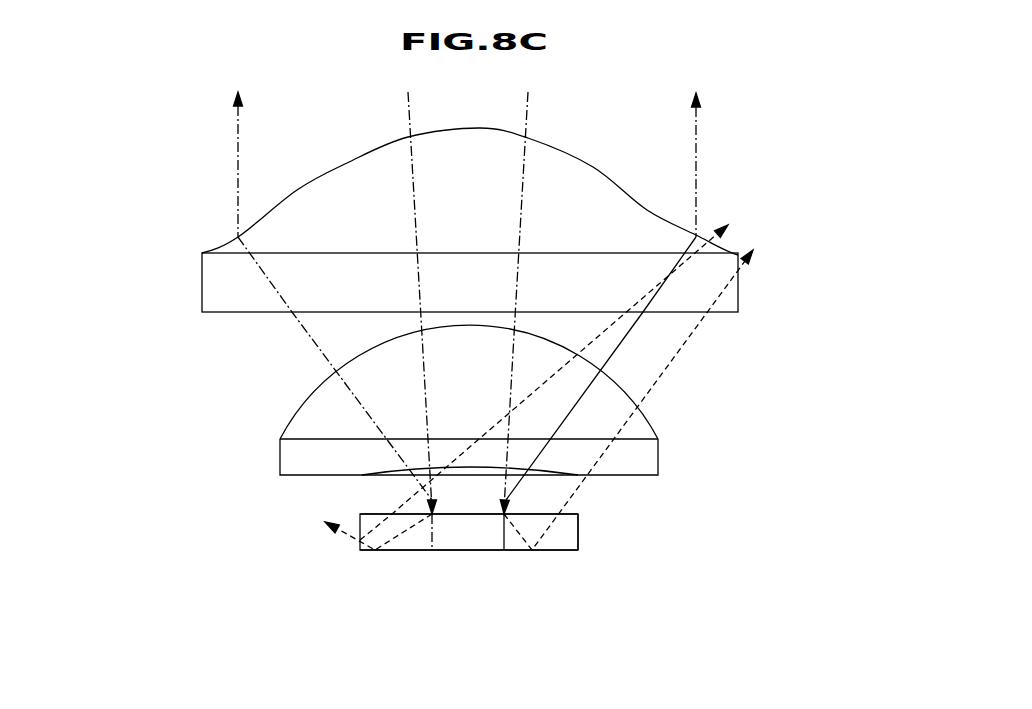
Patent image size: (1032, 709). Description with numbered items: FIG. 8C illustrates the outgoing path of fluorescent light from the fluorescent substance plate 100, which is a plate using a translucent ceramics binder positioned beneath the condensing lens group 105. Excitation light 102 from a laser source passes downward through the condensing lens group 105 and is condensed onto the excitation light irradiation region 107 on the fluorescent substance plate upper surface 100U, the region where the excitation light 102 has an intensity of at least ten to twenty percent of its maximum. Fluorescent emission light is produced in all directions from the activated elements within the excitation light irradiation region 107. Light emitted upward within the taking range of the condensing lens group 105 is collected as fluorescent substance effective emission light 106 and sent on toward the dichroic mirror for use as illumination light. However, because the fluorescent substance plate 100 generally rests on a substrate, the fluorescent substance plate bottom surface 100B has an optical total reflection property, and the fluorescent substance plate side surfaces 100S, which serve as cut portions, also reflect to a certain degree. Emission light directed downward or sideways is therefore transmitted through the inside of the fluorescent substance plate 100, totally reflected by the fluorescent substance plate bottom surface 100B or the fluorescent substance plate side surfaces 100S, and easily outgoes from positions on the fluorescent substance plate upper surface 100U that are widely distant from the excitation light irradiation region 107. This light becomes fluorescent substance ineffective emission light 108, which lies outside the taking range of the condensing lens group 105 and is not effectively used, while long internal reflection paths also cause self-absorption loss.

The fluorescent substance plate 100 is at (360, 540).
The fluorescent substance plate upper surface 100U is at (565, 514).
The fluorescent substance plate side surfaces 100S is at (578, 527).
The fluorescent substance plate bottom surface 100B is at (572, 552).
The excitation light 102 is at (529, 112).
The condensing lens group 105 is at (198, 115).
The fluorescent substance effective emission light 106 is at (697, 128).
The excitation light irradiation region 107 is at (452, 542).
The fluorescent substance ineffective emission light 108 is at (677, 358).